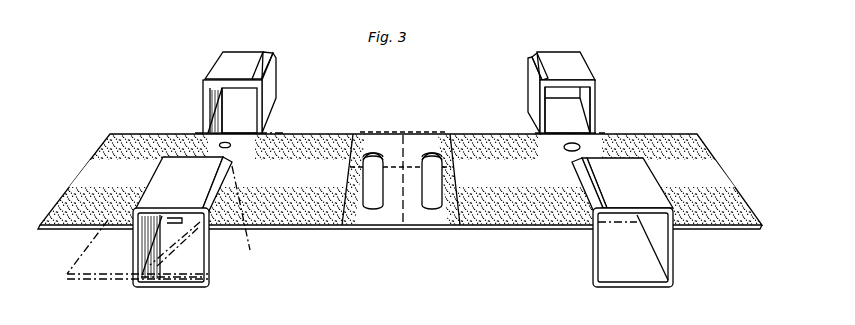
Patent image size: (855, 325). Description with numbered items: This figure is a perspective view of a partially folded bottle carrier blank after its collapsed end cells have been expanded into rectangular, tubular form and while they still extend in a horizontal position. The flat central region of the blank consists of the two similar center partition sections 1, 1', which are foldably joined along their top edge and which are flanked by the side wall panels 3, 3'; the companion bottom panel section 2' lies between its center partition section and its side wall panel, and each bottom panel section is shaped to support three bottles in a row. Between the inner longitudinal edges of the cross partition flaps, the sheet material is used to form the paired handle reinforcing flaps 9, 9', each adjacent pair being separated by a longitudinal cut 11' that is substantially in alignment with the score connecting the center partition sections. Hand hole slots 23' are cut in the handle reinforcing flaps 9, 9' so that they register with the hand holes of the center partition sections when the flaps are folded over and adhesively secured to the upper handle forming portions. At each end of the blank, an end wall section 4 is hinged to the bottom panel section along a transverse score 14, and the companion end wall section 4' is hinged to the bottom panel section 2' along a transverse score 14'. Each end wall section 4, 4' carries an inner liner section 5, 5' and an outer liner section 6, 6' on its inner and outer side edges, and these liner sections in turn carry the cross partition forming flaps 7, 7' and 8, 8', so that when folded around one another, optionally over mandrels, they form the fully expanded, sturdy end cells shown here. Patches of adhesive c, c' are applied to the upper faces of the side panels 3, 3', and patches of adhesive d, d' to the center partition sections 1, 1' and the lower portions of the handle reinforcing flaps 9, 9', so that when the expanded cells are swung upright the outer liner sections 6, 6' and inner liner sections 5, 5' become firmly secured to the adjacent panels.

The center partition section 1 is at (392, 169).
The center partition section 1' is at (503, 174).
The side wall panel 3 is at (417, 171).
The side wall panel 3' is at (69, 165).
The patch of adhesive c is at (433, 183).
The patch of adhesive c' is at (67, 176).
The patch of adhesive d is at (401, 188).
The patch of adhesive d' is at (380, 174).
The longitudinal cut 11' is at (415, 196).
The handle reinforcing flap 9 is at (435, 191).
The handle reinforcing flap 9' is at (380, 191).
The hand hole slot 23' is at (416, 184).
The bottom panel section 2' is at (374, 134).
The transverse score 14 is at (591, 124).
The transverse score 14' is at (255, 132).
The cross partition forming flap 8 is at (598, 170).
The cross partition forming flap 8' is at (189, 169).
The cross partition forming flap 7 is at (544, 155).
The cross partition forming flap 7' is at (275, 154).
The inner liner section 5 is at (541, 167).
The inner liner section 5' is at (263, 165).
The outer liner section 6 is at (622, 169).
The outer liner section 6' is at (160, 202).
The end wall section 4 is at (594, 201).
The end wall section 4' is at (237, 199).